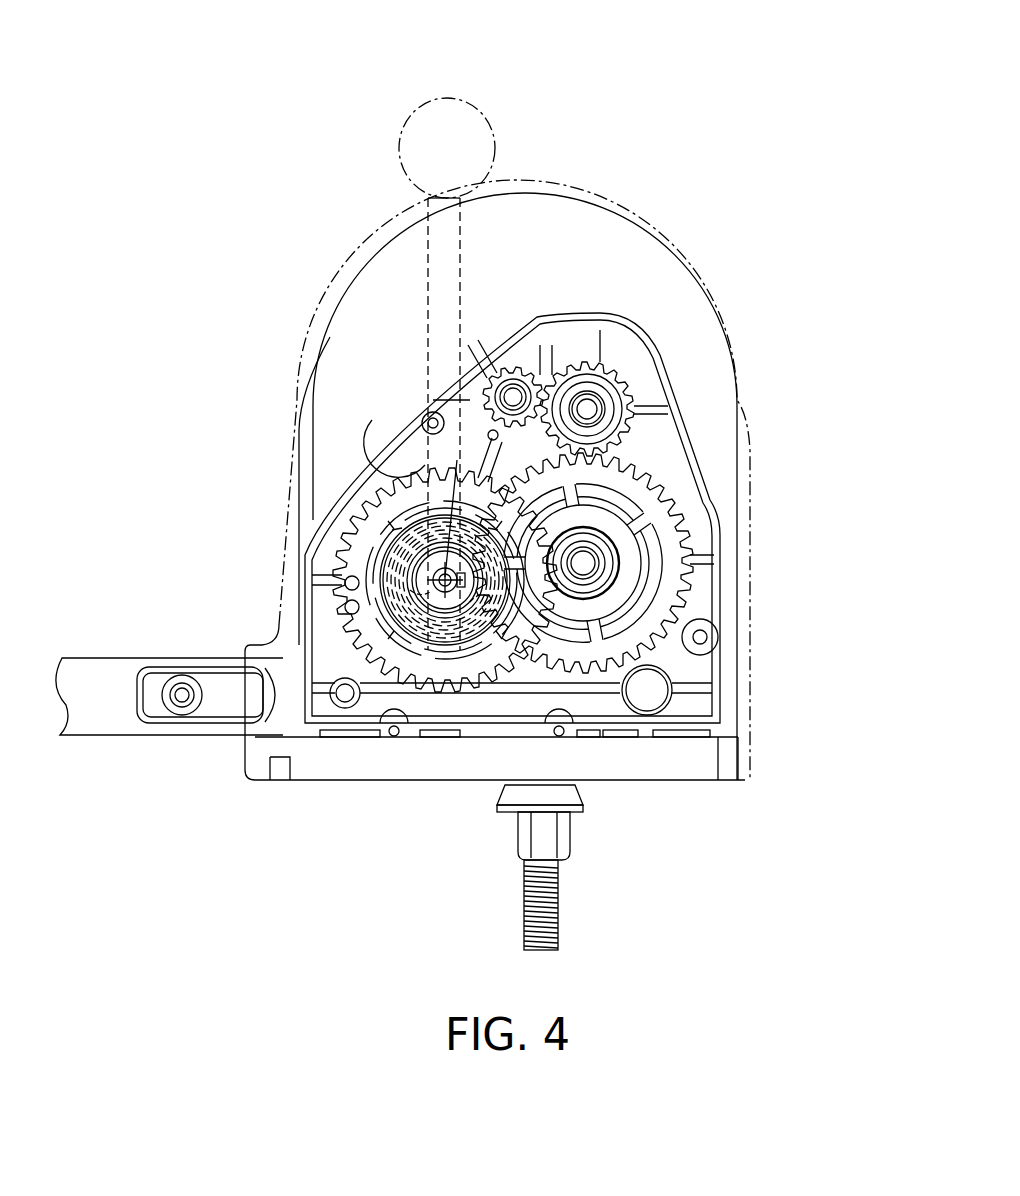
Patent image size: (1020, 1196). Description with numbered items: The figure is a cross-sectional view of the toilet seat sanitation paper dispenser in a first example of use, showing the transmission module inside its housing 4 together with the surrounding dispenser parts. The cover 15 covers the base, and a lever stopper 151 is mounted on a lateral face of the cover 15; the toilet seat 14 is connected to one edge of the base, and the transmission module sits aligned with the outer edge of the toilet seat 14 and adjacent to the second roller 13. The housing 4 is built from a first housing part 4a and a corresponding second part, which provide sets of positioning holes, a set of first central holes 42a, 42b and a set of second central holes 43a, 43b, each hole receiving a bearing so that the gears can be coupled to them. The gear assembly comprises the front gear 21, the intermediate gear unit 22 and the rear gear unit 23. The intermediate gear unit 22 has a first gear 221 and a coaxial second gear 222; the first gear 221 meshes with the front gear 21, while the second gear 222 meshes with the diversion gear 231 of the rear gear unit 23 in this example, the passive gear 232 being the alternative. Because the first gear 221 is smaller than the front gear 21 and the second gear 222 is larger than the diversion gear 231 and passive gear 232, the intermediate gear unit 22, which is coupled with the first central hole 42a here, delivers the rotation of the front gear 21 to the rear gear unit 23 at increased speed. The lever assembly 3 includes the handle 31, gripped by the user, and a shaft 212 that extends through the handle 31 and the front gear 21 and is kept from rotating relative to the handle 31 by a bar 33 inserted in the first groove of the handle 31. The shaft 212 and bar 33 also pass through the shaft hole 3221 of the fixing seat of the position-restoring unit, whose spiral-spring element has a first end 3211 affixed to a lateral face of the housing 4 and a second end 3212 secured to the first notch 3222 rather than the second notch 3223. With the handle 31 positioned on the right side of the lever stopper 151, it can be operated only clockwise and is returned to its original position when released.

The lever assembly 3 is at (404, 329).
The handle 31 is at (413, 130).
The cover 15 is at (497, 431).
The lever stopper 151 is at (312, 340).
The second roller 13 is at (673, 283).
The housing 4 is at (538, 529).
The first housing part 4a is at (663, 363).
The rear gear unit 23 is at (603, 281).
The passive gear 232 is at (560, 350).
The diversion gear 231 is at (656, 372).
The second central hole 43a is at (692, 498).
The second central hole 43b is at (583, 563).
The intermediate gear unit 22 is at (692, 513).
The second gear 222 is at (722, 508).
The first central hole 42a is at (718, 563).
The first central hole 42b is at (583, 563).
The first gear 221 is at (640, 548).
The front gear 21 is at (357, 541).
The shaft 212 is at (427, 545).
The bar 33 is at (437, 573).
The second end 3212 is at (345, 592).
The shaft hole 3221 is at (441, 580).
The second notch 3223 is at (450, 560).
The first notch 3222 is at (398, 697).
The first end 3211 is at (385, 600).
The toilet seat 14 is at (92, 665).